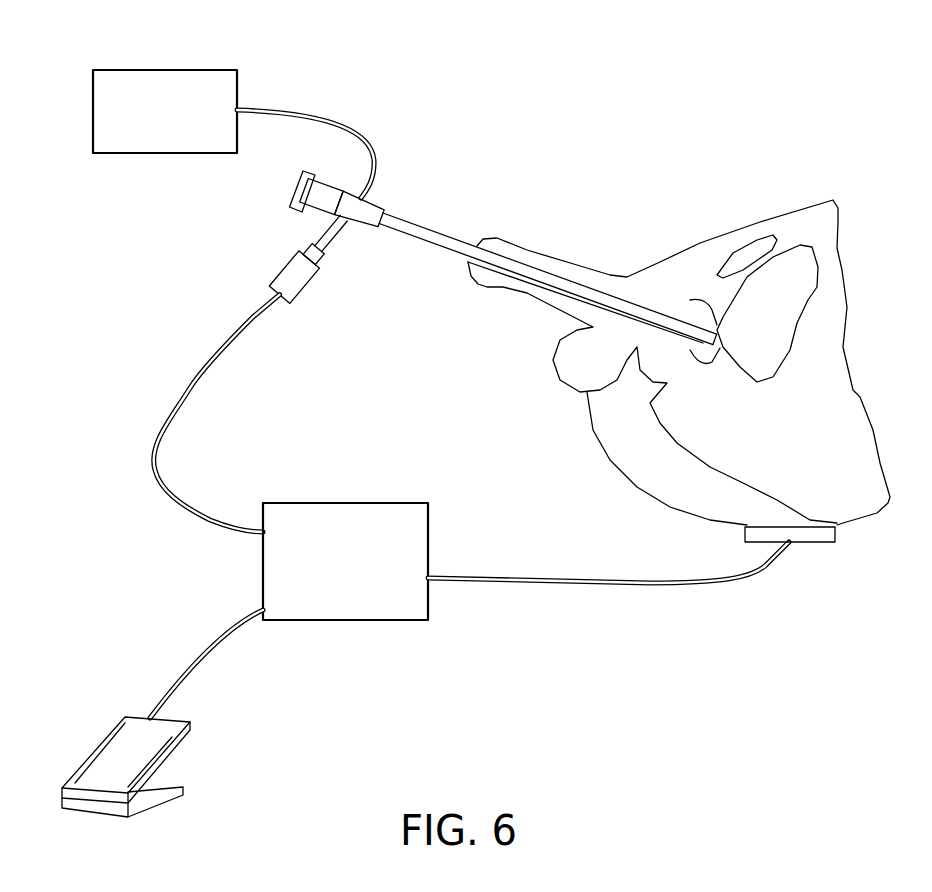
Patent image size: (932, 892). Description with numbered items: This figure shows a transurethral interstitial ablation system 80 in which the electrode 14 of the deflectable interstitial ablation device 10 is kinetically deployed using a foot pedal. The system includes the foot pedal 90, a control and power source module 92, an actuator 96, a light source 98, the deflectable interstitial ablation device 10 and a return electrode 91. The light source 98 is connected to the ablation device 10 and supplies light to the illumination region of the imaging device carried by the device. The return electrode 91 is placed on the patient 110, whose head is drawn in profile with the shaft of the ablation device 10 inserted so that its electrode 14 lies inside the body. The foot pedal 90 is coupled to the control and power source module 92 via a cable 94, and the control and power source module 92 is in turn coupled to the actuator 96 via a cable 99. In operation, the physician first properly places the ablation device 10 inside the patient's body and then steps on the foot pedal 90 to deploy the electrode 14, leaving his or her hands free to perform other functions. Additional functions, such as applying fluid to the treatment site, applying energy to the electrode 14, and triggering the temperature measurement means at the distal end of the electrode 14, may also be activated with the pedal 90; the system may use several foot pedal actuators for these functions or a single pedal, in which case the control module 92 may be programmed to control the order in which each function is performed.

The endoscopic surgical system 80 is at (583, 77).
The light source 98 is at (168, 70).
The deflectable interstitial ablation device 10 is at (428, 220).
The actuator 96 is at (308, 287).
The cable 99 is at (193, 382).
The control and power source module 92 is at (263, 562).
The cable 94 is at (203, 657).
The foot pedal 90 is at (108, 733).
The patient 110 is at (838, 459).
The electrode 14 is at (717, 333).
The return electrode 91 is at (823, 543).